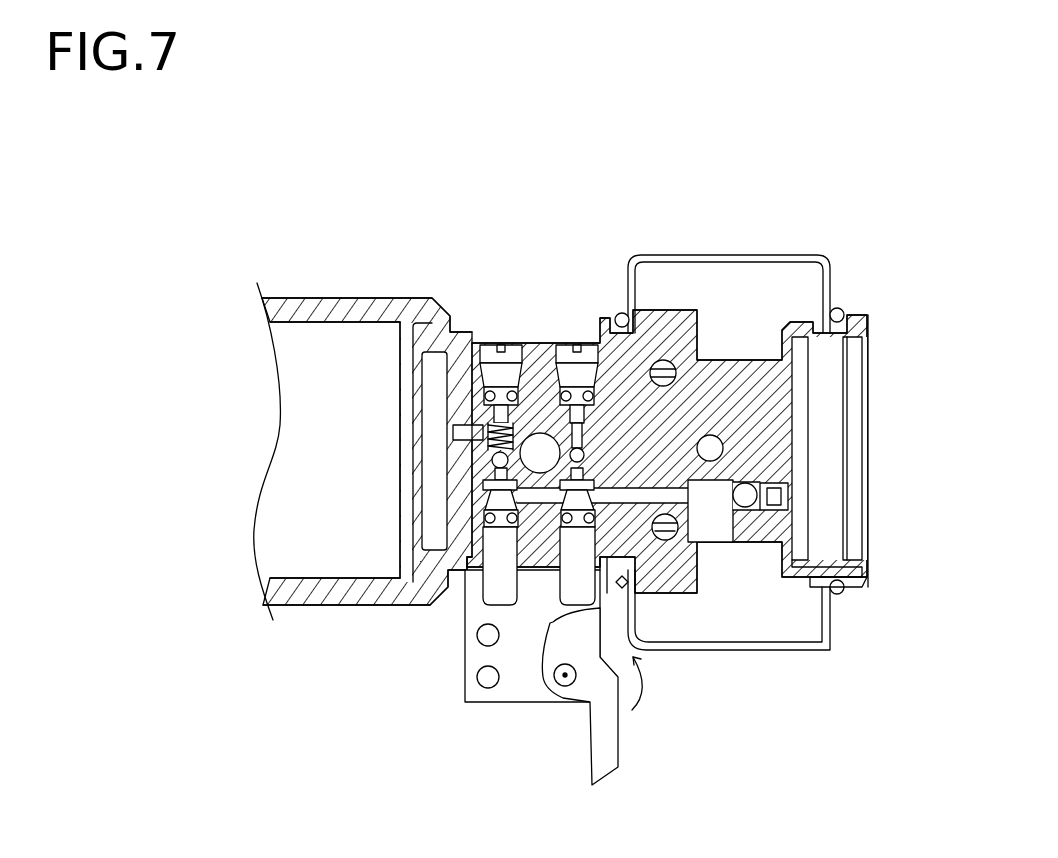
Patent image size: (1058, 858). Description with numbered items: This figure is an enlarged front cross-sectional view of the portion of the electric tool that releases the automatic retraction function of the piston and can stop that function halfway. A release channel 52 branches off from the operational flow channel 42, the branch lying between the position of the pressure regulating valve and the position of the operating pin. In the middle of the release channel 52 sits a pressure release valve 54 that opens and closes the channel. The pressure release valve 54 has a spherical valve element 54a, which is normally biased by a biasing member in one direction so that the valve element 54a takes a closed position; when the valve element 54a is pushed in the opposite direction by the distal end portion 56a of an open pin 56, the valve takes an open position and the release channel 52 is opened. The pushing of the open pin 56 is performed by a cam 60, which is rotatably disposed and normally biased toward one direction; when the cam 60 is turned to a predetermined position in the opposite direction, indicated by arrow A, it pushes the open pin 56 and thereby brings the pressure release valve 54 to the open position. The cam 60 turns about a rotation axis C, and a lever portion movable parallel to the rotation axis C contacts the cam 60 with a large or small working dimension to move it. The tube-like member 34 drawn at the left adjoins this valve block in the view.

The tube 34 is at (350, 307).
The operational flow channel 42 is at (540, 440).
The release channel 52 is at (537, 567).
The pressure release valve 54 is at (583, 437).
The valve element 54a is at (763, 432).
The open pin 56 is at (596, 492).
The distal end portion 56a is at (760, 512).
The cam 60 is at (612, 747).
The arrow A is at (649, 683).
The rotation axis C is at (562, 682).